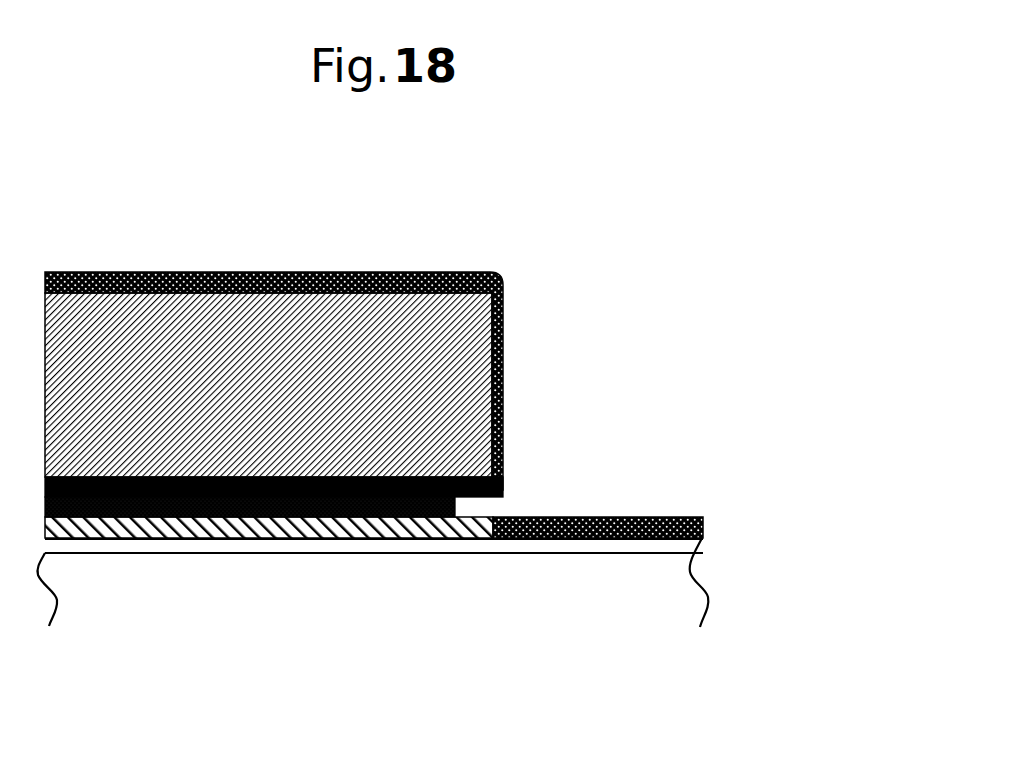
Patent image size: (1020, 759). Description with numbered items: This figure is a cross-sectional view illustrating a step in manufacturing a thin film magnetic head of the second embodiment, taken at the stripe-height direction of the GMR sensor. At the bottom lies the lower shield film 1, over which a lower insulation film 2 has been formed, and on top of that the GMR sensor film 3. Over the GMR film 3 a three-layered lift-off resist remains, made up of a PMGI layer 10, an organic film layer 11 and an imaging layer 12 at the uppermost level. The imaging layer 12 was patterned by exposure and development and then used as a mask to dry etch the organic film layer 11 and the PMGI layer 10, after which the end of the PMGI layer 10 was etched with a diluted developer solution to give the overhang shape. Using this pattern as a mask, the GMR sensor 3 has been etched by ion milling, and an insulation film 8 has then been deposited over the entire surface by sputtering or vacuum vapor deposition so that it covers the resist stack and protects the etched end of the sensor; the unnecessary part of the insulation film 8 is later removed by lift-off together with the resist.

The lower shield film 1 is at (640, 597).
The lower insulation film 2 is at (692, 546).
The GMR sensor film 3 is at (360, 538).
The insulation film 8 is at (625, 517).
The PMGI layer 10 is at (458, 503).
The organic film layer 11 is at (505, 483).
The imaging layer 12 is at (505, 387).